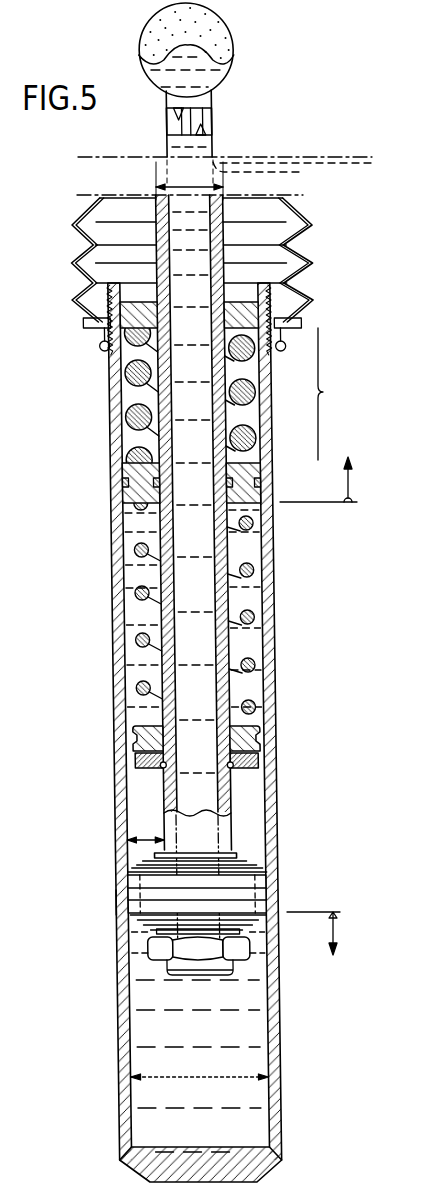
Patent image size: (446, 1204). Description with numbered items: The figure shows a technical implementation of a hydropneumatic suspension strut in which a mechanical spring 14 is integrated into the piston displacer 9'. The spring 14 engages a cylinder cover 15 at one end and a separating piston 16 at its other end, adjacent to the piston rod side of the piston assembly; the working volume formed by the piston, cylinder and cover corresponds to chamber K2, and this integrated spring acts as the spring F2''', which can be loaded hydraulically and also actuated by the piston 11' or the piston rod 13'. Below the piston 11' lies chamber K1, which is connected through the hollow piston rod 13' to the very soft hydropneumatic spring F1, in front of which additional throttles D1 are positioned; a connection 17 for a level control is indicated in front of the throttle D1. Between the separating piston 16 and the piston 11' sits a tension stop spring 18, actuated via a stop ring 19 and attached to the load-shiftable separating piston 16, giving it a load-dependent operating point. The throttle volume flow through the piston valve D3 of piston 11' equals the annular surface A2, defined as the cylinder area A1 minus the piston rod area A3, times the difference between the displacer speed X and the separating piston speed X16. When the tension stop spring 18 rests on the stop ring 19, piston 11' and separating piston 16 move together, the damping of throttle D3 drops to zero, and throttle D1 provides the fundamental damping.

The hydropneumatic spring F1 is at (227, 33).
The throttle D1 is at (226, 122).
The connection for a level control 17 is at (351, 163).
The piston rod cross-sectional area A3 is at (189, 180).
The cylinder cover 15 is at (98, 319).
The mechanical spring 14 is at (133, 376).
The spring F2''' is at (349, 394).
The speed of separating piston X16 is at (341, 479).
The separating piston 16 is at (142, 490).
The chamber K2 is at (255, 600).
The tension stop spring 18 is at (253, 667).
The piston displacer 9' is at (225, 732).
The stop ring 19 is at (252, 768).
The hollow piston rod 13' is at (154, 570).
The annular surface A2 is at (145, 827).
The piston 11' is at (224, 914).
The piston valve D3 is at (104, 907).
The displacer speed X is at (324, 941).
The chamber K1 is at (260, 1038).
The cylinder cross-sectional area A1 is at (199, 1065).